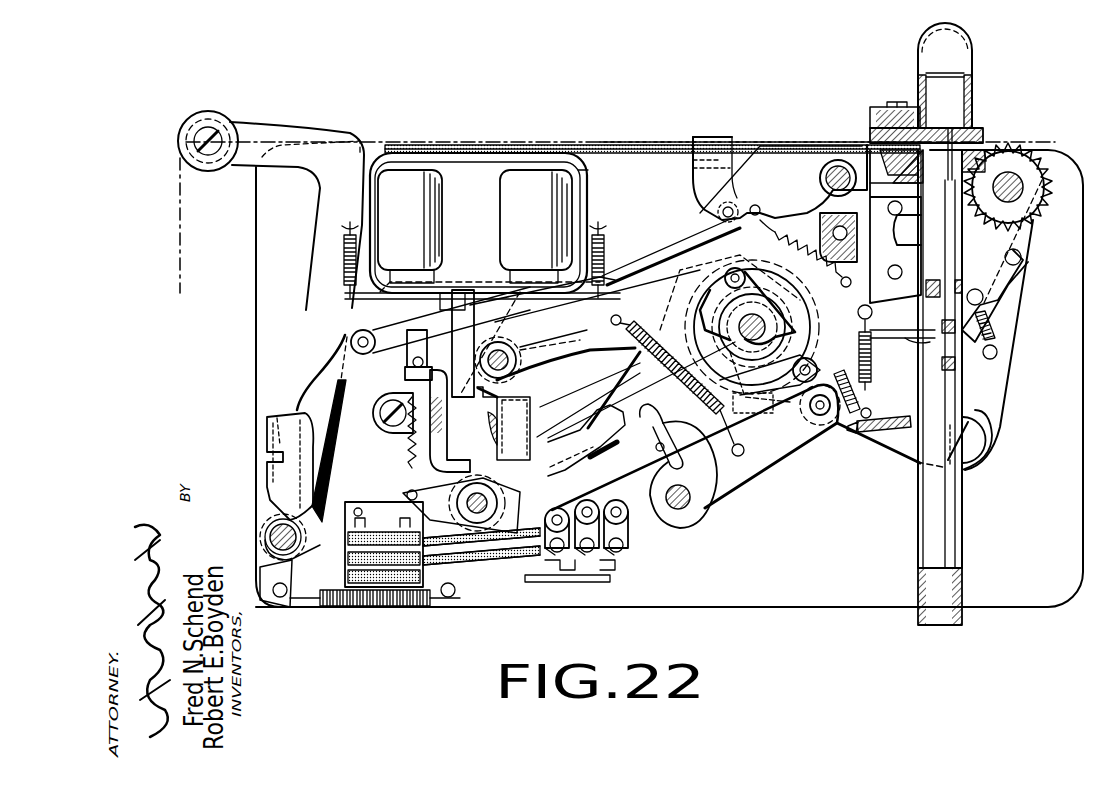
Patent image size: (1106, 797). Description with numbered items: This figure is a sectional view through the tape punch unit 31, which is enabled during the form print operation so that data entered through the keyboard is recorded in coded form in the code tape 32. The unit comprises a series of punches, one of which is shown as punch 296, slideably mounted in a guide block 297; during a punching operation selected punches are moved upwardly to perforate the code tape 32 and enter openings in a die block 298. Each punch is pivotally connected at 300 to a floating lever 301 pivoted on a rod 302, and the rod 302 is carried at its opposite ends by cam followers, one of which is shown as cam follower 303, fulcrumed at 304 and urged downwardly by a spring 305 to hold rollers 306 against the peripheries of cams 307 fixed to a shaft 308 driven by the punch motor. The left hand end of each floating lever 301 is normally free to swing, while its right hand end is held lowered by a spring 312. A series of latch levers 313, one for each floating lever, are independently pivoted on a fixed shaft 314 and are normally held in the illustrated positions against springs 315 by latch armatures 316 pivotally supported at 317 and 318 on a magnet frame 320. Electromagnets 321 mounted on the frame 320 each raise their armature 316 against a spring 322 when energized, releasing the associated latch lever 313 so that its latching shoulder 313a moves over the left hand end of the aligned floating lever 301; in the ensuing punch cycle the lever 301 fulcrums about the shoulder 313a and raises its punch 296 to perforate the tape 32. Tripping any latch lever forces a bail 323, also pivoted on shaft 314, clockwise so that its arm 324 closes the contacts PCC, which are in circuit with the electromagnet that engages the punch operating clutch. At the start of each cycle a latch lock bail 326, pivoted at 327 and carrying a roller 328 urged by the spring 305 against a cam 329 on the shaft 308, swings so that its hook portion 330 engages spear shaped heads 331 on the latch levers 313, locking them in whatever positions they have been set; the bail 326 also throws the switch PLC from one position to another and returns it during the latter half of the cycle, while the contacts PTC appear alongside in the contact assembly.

The tape punch unit 31 is at (636, 132).
The code tape 32 is at (178, 204).
The punch 296 is at (925, 205).
The guide block 297 is at (930, 350).
The die block 298 is at (950, 125).
The pivotal connection 300 is at (902, 335).
The floating lever 301 is at (875, 362).
The rod 302 is at (815, 366).
The cam follower 303 is at (617, 269).
The fulcrum 304 is at (555, 361).
The spring 305 is at (600, 382).
The roller 306 is at (724, 272).
The cam 307 is at (795, 312).
The shaft 308 is at (765, 322).
The spring 312 is at (837, 427).
The latch lever 313 is at (440, 318).
The latching shoulder 313a is at (470, 300).
The fixed shaft 314 is at (456, 498).
The spring 315 is at (402, 440).
The latch armature 316 is at (500, 292).
The pivotal support 317 is at (610, 320).
The pivotal support 318 is at (352, 325).
The magnet frame 320 is at (486, 164).
The electromagnet 321 is at (507, 205).
The spring 322 is at (340, 250).
The bail 323 is at (525, 411).
The arm 324 is at (501, 543).
The latch lock bail 326 is at (700, 470).
The pivot 327 is at (692, 508).
The roller 328 is at (800, 413).
The cam 329 is at (772, 255).
The hook portion 330 is at (658, 438).
The spear shaped head 331 is at (612, 440).
The contact PTC is at (556, 568).
The switch PLC is at (590, 560).
The contacts PCC is at (612, 570).